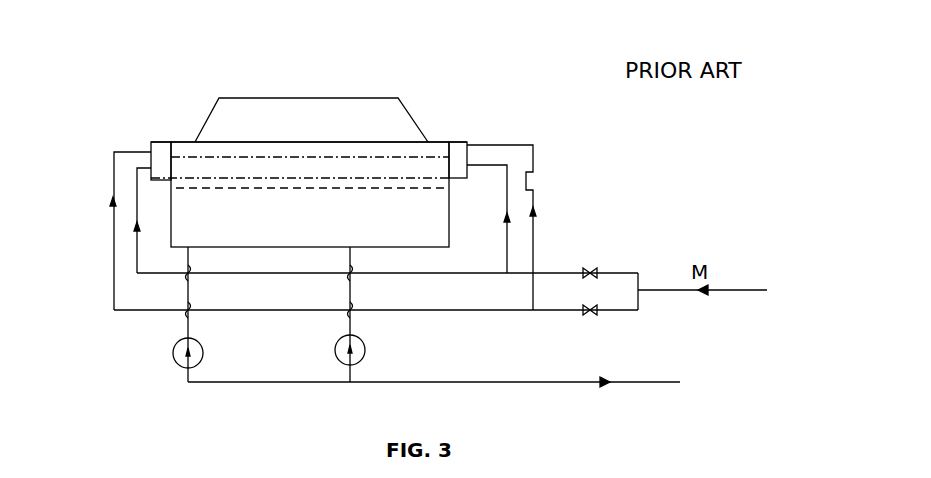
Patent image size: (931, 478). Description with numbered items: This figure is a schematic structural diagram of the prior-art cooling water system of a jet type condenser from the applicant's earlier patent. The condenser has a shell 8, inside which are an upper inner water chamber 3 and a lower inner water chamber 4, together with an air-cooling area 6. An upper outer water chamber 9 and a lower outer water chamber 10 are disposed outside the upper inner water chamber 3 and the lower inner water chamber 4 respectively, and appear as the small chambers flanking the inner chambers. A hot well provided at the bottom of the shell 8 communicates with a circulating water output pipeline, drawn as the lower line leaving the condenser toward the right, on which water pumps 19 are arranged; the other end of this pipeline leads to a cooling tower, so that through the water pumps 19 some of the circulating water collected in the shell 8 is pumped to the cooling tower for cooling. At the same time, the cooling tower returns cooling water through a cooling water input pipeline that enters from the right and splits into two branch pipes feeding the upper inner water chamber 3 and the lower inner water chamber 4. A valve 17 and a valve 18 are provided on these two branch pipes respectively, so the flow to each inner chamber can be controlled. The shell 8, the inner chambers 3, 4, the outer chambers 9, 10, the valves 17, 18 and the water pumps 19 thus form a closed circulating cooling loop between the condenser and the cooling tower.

The upper inner water chamber 3 is at (308, 155).
The lower inner water chamber 4 is at (347, 160).
The air-cooling area 6 is at (248, 183).
The shell of the condenser 8 is at (380, 225).
The upper outer water chamber 9 is at (168, 165).
The lower outer water chamber 10 is at (160, 170).
The valve 17 is at (600, 312).
The valve 18 is at (597, 268).
The water pump 19 is at (340, 362).